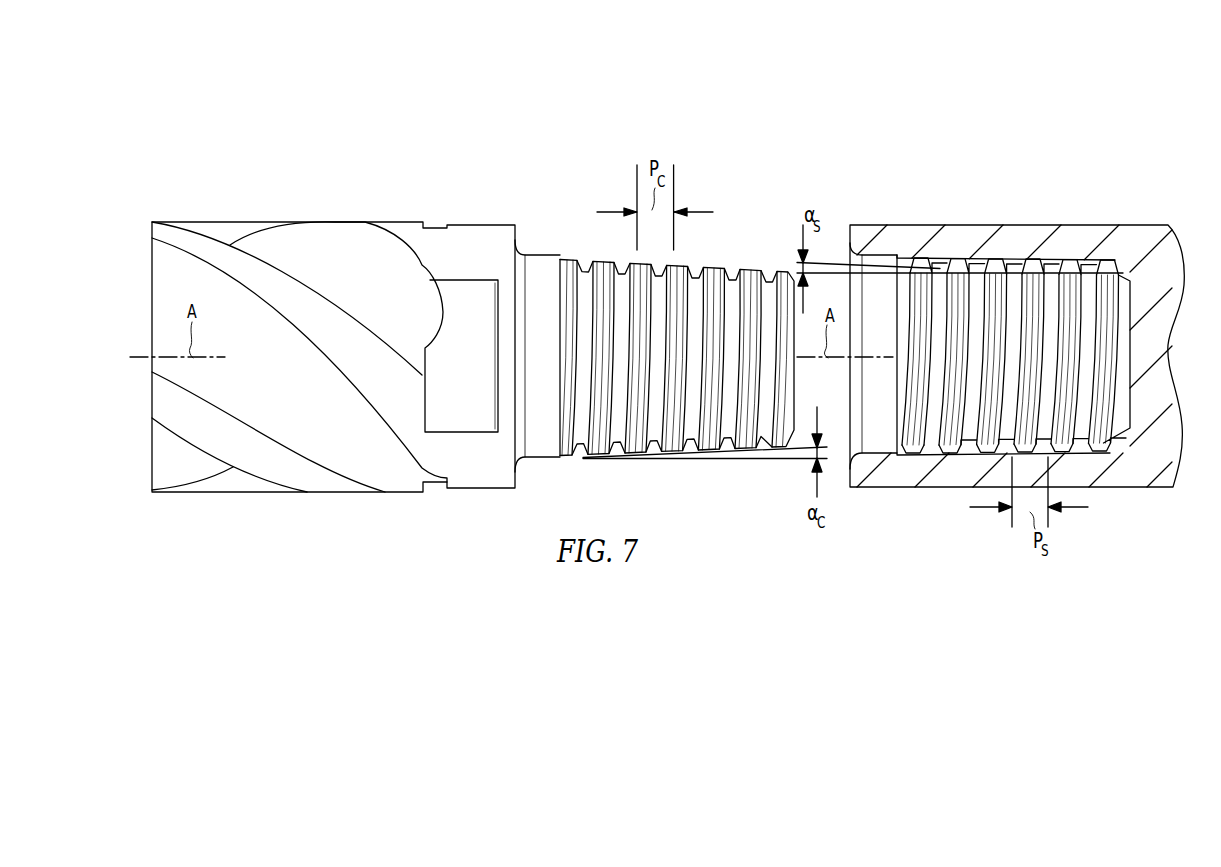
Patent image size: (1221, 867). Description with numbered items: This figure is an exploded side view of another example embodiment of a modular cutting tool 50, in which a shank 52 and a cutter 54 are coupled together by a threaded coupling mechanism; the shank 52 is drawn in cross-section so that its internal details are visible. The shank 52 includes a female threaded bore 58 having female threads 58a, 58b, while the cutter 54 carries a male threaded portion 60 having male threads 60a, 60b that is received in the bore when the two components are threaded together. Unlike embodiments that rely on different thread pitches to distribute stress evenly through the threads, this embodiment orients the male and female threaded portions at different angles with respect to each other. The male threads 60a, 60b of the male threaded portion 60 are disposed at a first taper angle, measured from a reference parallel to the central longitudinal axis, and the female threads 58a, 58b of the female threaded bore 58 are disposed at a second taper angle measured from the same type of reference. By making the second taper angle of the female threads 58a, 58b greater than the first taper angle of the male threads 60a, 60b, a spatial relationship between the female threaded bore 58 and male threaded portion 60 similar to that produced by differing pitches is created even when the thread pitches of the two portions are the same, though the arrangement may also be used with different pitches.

The modular cutting tool 50 is at (448, 97).
The shank 52 is at (1050, 212).
The cutter 54 is at (365, 183).
The female threaded bore 58 is at (913, 395).
The female thread 58a is at (1000, 452).
The female thread 58b is at (1053, 450).
The male threaded portion 60 is at (673, 470).
The male thread 60a is at (672, 258).
The male thread 60b is at (638, 258).